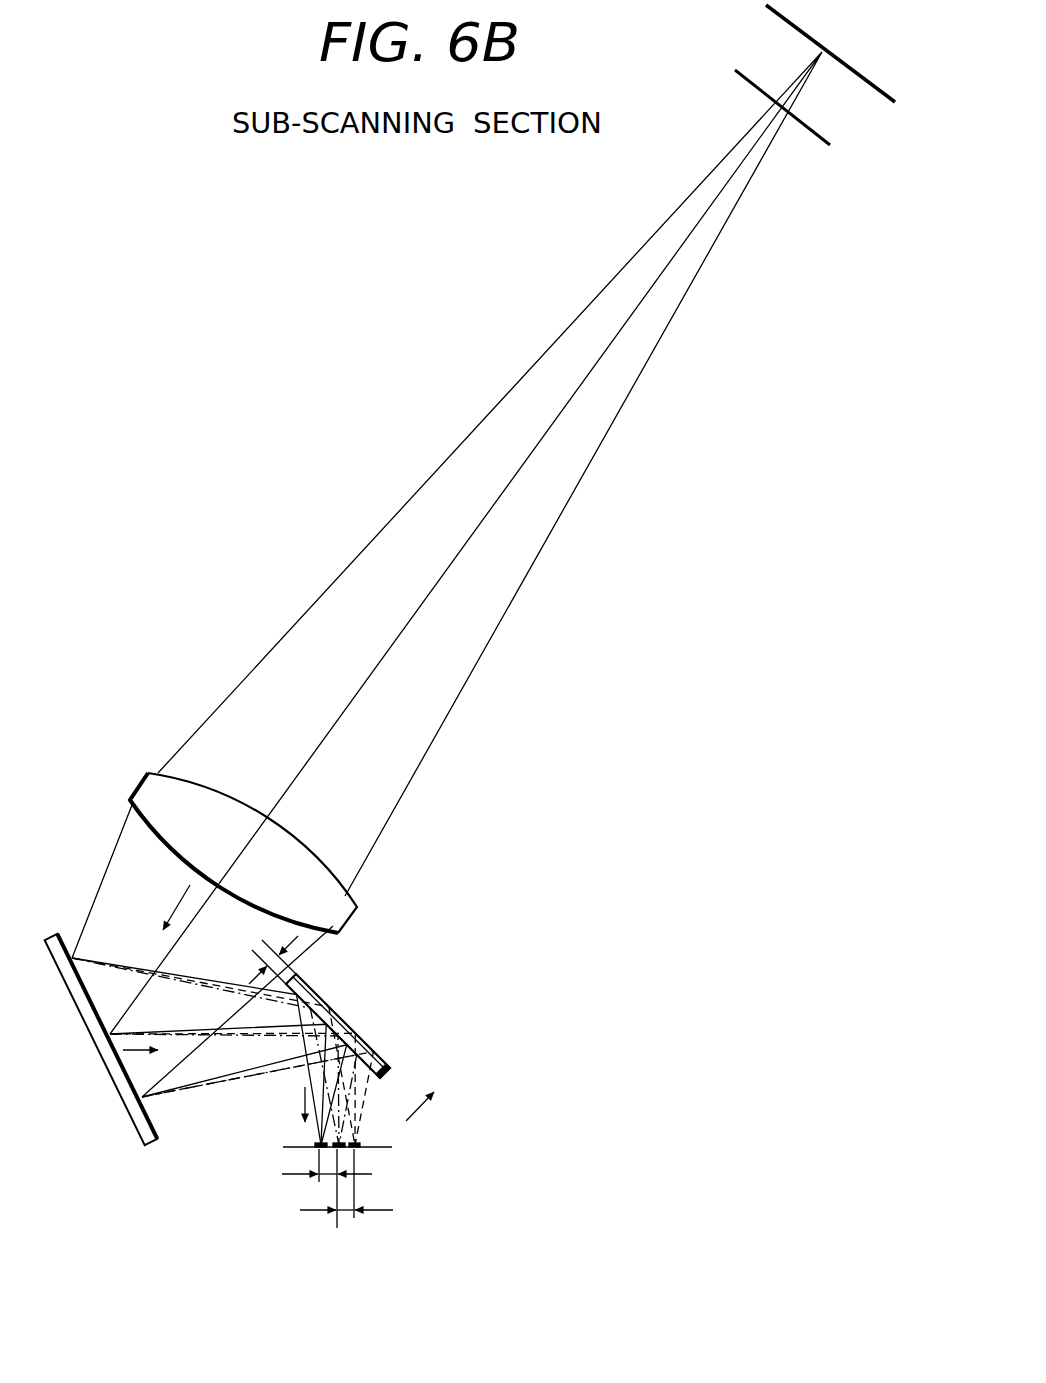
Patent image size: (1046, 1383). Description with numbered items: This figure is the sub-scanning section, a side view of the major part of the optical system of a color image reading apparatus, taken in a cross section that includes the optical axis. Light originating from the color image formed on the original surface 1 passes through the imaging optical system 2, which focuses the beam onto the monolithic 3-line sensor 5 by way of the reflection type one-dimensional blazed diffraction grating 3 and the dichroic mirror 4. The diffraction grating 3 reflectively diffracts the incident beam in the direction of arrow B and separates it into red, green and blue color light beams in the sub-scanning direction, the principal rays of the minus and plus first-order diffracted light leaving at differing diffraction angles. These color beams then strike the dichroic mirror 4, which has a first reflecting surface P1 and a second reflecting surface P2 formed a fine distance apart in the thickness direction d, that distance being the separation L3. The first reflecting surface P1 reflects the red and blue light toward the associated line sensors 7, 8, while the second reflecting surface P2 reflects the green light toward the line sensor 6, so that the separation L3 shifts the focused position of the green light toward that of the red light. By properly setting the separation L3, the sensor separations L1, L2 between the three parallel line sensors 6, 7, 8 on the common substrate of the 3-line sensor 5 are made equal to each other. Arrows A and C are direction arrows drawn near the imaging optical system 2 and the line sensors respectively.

The original surface 1 is at (872, 88).
The imaging optical system 2 is at (357, 909).
The reflection type one-dimensional blazed diffraction grating 3 is at (146, 1148).
The dichroic mirror 4 is at (347, 1021).
The monolithic 3-line sensor 5 is at (388, 1149).
The line sensor 6 is at (314, 1146).
The line sensor 7 is at (333, 1149).
The line sensor 8 is at (360, 1149).
The sensor separation L1 is at (319, 1181).
The sensor separation L2 is at (343, 1212).
The separation between the two reflecting surfaces L3 is at (268, 953).
The first reflecting surface P1 is at (382, 1080).
The second reflecting surface P2 is at (386, 1064).
The arrow A is at (171, 904).
The direction of arrow B is at (140, 1066).
The arrow C is at (291, 1104).
The thickness direction d is at (424, 1111).